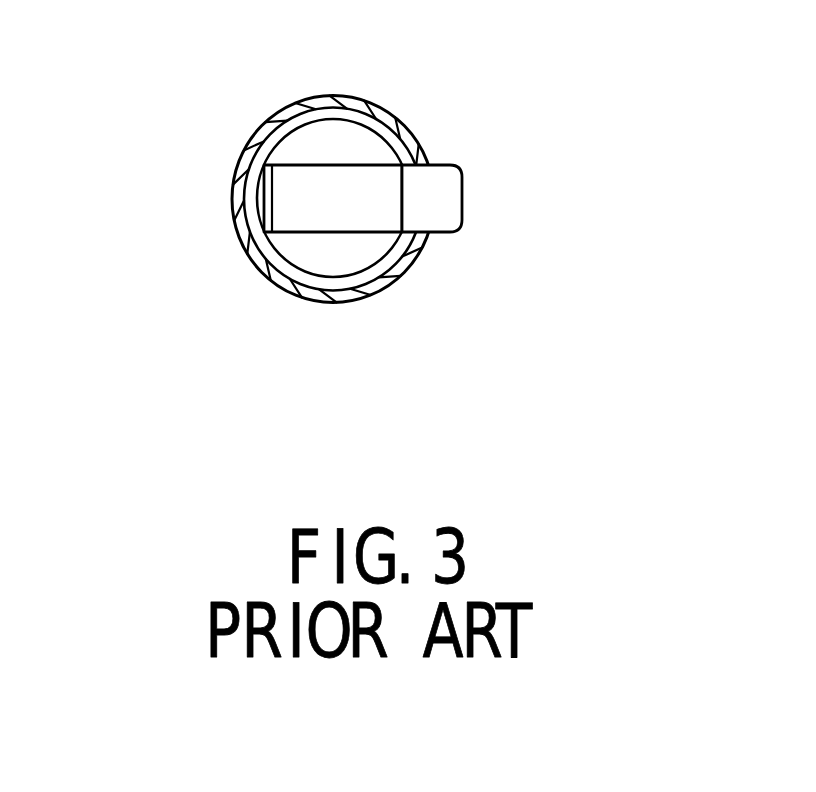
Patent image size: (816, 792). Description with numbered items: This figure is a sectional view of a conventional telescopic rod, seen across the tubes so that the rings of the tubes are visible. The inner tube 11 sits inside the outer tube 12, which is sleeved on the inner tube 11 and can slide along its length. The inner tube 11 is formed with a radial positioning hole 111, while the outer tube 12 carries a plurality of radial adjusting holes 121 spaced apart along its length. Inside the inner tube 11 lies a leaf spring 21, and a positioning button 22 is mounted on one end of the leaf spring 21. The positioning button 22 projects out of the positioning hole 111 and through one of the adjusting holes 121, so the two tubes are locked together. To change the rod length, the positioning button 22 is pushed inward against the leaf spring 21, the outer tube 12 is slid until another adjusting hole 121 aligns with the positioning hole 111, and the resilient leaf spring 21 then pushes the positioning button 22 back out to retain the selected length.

The inner tube 11 is at (260, 150).
The outer tube 12 is at (308, 105).
The positioning hole 111 is at (413, 160).
The adjusting holes 121 is at (425, 164).
The leaf spring 21 is at (333, 188).
The positioning button 22 is at (437, 210).